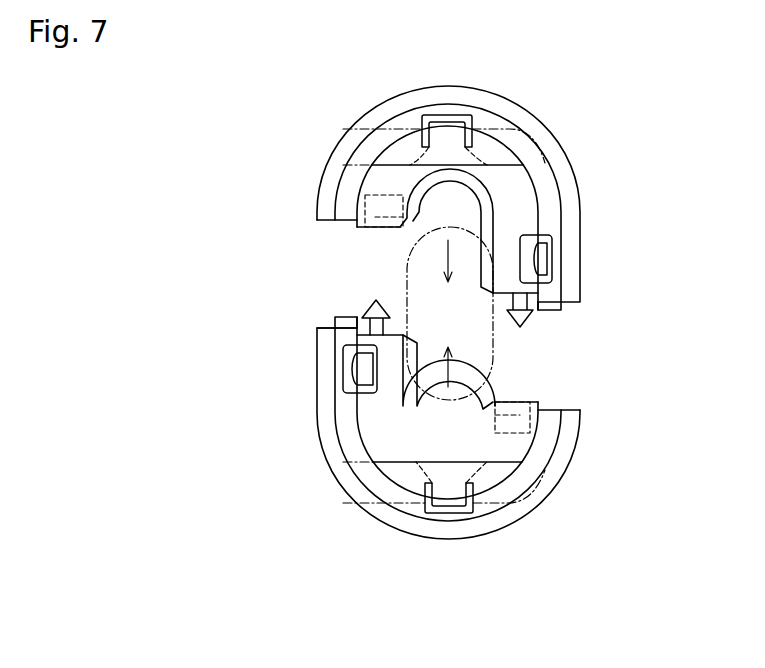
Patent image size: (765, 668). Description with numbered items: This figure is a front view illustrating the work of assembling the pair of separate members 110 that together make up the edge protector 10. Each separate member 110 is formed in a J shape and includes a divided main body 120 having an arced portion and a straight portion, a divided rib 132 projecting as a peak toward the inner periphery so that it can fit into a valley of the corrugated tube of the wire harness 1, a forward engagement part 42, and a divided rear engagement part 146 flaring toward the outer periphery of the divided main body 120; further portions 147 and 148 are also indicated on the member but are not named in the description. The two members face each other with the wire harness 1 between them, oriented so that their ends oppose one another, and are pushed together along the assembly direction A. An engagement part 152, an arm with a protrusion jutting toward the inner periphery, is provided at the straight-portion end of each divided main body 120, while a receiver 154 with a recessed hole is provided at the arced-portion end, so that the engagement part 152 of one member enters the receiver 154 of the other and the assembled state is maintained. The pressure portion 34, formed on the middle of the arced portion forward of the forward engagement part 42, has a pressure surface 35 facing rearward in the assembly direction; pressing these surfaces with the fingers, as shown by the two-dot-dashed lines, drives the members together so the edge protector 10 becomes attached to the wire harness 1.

The edge protector 10 is at (335, 57).
The separate member 110 is at (353, 120).
The divided rear engagement part 146 is at (333, 147).
The inner ring edge 147 is at (343, 185).
The ring end face 148 is at (325, 213).
The divided main body 120 is at (538, 190).
The divided rib 132 is at (458, 176).
The forward engagement part 42 is at (452, 125).
The engagement part 152 is at (523, 324).
The receiver 154 is at (375, 228).
The pressure surface 35 is at (436, 311).
The pressure portion 34 is at (492, 165).
The wire harness 1 is at (496, 348).